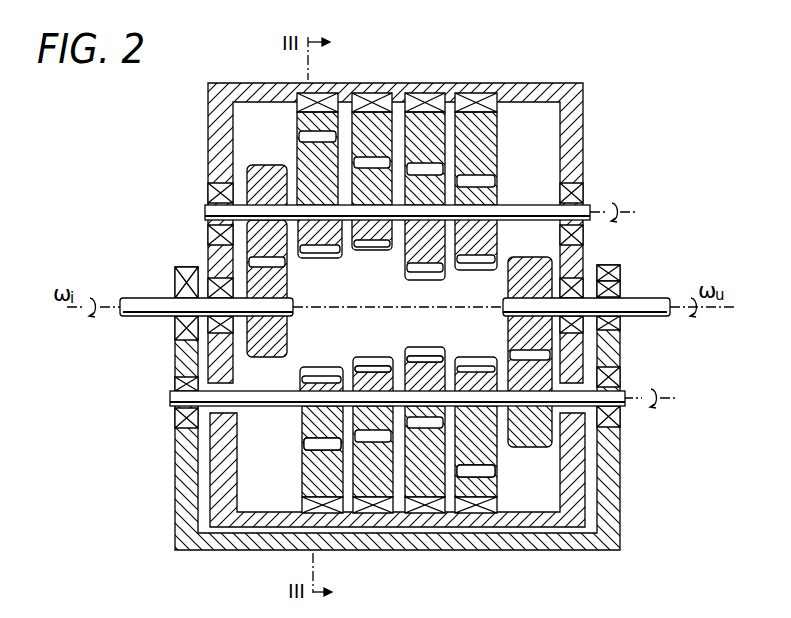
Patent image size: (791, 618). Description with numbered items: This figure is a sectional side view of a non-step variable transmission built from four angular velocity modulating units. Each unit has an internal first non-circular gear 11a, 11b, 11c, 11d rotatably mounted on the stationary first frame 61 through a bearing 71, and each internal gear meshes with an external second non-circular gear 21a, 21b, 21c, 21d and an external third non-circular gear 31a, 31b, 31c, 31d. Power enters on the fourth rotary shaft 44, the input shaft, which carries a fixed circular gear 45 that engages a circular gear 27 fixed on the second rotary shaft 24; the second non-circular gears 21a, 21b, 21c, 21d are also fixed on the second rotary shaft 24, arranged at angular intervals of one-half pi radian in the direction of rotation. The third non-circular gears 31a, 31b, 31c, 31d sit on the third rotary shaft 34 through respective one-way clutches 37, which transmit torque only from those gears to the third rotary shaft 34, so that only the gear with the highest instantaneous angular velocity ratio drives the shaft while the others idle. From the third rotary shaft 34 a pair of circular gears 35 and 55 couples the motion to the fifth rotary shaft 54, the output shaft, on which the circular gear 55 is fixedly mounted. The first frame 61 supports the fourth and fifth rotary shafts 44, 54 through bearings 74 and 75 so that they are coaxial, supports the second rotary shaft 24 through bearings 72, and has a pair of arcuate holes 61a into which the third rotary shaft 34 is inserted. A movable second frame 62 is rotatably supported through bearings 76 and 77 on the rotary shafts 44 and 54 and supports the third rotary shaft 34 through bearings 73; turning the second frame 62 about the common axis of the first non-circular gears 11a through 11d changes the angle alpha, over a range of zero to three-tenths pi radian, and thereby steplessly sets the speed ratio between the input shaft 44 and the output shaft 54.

The first non-circular gear 11a is at (315, 122).
The first non-circular gear 11b is at (363, 127).
The first non-circular gear 11c is at (420, 130).
The first non-circular gear 11d is at (475, 137).
The second non-circular gear 21a is at (321, 242).
The second non-circular gear 21b is at (373, 240).
The second non-circular gear 21c is at (427, 255).
The second non-circular gear 21d is at (478, 246).
The third non-circular gear 31a is at (323, 371).
The third non-circular gear 31b is at (373, 357).
The third non-circular gear 31c is at (425, 352).
The third non-circular gear 31d is at (480, 364).
The second rotary shaft 24 is at (207, 211).
The circular gear 27 is at (250, 178).
The third rotary shaft 34 is at (622, 402).
The circular gear 35 is at (539, 424).
The one-way clutch 37 is at (364, 383).
The fourth rotary shaft 44 is at (144, 318).
The circular gear 45 is at (268, 342).
The fifth rotary shaft 54 is at (651, 298).
The circular gear 55 is at (530, 281).
The first frame 61 is at (570, 119).
The arcuate hole 61a is at (236, 414).
The second frame 62 is at (185, 480).
The bearing 71 is at (302, 100).
The bearing 72 is at (220, 194).
The bearing 73 is at (180, 415).
The bearing 74 is at (220, 280).
The bearing 75 is at (586, 288).
The bearing 76 is at (177, 292).
The bearing 77 is at (622, 292).